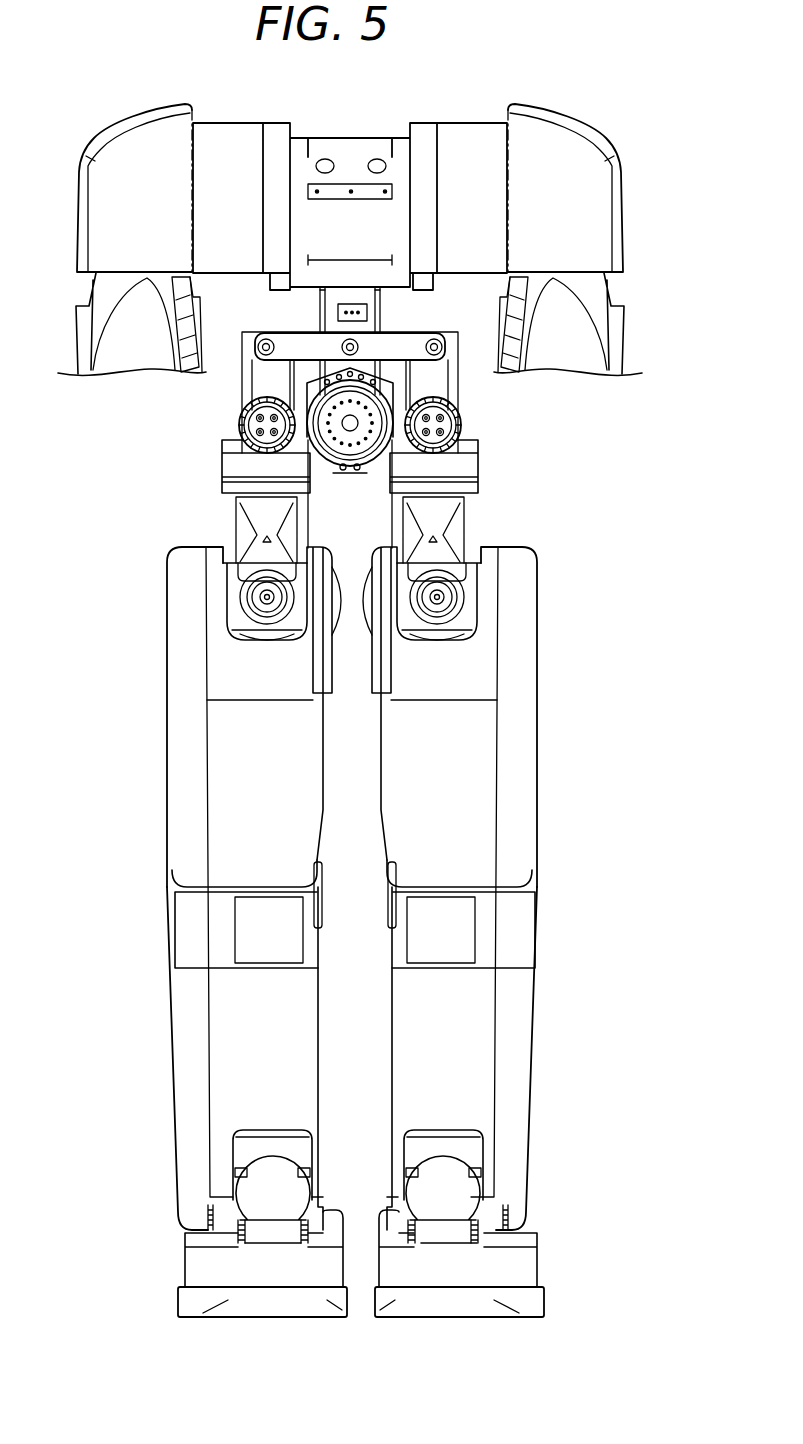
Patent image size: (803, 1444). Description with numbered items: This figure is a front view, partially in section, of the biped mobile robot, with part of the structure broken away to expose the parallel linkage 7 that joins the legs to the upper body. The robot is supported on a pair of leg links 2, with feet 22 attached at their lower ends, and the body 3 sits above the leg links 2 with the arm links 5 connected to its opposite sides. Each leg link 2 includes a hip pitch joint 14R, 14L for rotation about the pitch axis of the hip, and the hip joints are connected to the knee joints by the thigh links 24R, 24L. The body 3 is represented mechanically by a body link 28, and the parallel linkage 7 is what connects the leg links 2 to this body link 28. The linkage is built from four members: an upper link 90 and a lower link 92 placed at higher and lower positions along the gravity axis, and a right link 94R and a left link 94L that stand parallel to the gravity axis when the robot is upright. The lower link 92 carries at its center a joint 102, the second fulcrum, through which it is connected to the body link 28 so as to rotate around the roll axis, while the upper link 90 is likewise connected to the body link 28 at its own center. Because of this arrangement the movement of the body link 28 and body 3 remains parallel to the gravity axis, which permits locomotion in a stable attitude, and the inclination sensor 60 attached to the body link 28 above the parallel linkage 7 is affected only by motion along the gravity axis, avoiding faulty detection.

The leg links 2 is at (166, 813).
The body 3 is at (357, 150).
The arm links 5 is at (80, 356).
The parallel linkage 7 is at (446, 322).
The hip pitch joint (right) 14R is at (267, 600).
The hip pitch joint (left) 14L is at (440, 600).
The feet 22 is at (205, 1268).
The thigh link (right) 24R is at (223, 460).
The thigh link (left) 24L is at (472, 460).
The body link 28 is at (318, 320).
The inclination sensor 60 is at (338, 311).
The upper link 90 is at (399, 346).
The lower link 92 is at (398, 445).
The right link 94R is at (253, 380).
The left link 94L is at (443, 388).
The joint (second fulcrum) 102 is at (350, 430).